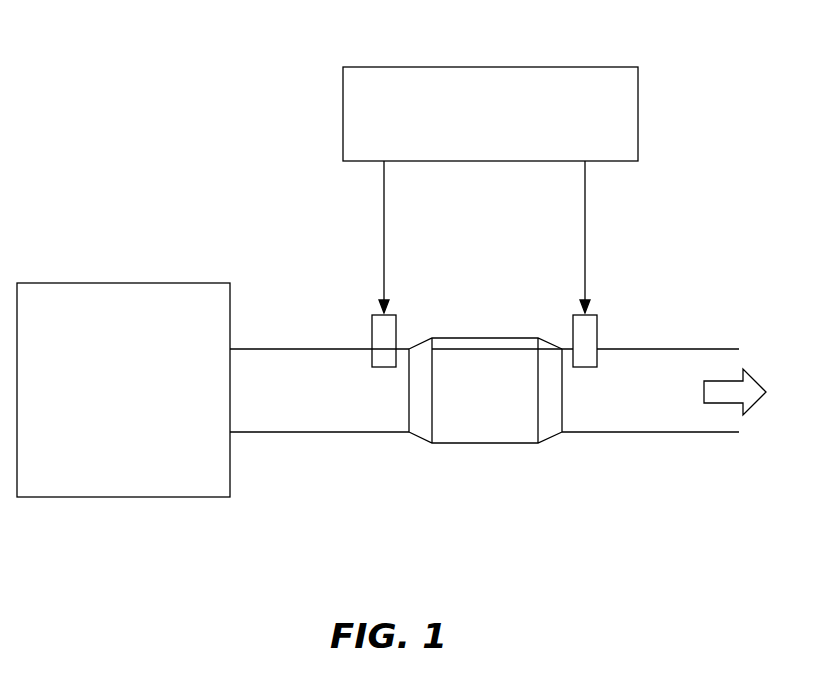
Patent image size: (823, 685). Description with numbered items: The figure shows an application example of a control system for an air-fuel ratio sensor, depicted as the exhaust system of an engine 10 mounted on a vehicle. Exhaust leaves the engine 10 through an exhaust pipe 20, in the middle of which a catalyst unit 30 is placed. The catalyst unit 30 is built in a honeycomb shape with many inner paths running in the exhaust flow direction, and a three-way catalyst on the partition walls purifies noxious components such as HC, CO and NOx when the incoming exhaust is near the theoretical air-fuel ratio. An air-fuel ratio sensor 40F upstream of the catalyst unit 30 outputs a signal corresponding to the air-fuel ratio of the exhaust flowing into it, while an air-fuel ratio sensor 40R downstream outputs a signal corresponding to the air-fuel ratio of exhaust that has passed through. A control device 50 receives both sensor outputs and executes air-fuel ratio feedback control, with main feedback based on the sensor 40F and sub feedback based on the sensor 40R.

The engine 10 is at (155, 283).
The exhaust pipe 20 is at (267, 349).
The catalyst unit 30 is at (487, 338).
The air-fuel ratio sensor 40F is at (390, 313).
The air-fuel ratio sensor 40R is at (592, 313).
The control device 50 is at (517, 67).